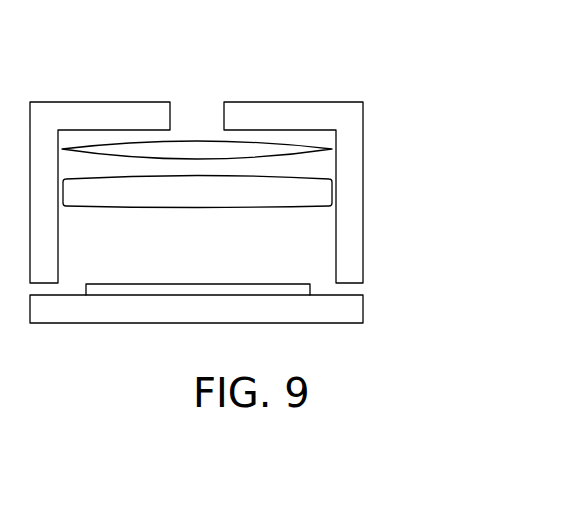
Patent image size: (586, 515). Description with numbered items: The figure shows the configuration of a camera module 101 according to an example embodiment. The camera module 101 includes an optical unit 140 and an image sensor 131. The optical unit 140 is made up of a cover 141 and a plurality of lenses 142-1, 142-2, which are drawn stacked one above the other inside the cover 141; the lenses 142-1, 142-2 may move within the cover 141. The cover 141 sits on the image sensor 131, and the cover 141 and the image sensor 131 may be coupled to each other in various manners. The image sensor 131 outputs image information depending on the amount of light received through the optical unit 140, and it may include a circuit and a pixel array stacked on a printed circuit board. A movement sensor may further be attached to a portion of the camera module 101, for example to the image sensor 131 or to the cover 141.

The camera module 101 is at (240, 40).
The optical unit 140 is at (287, 191).
The cover 141 is at (355, 114).
The lens 142-1 is at (312, 151).
The lens 142-2 is at (312, 194).
The image sensor 131 is at (356, 310).